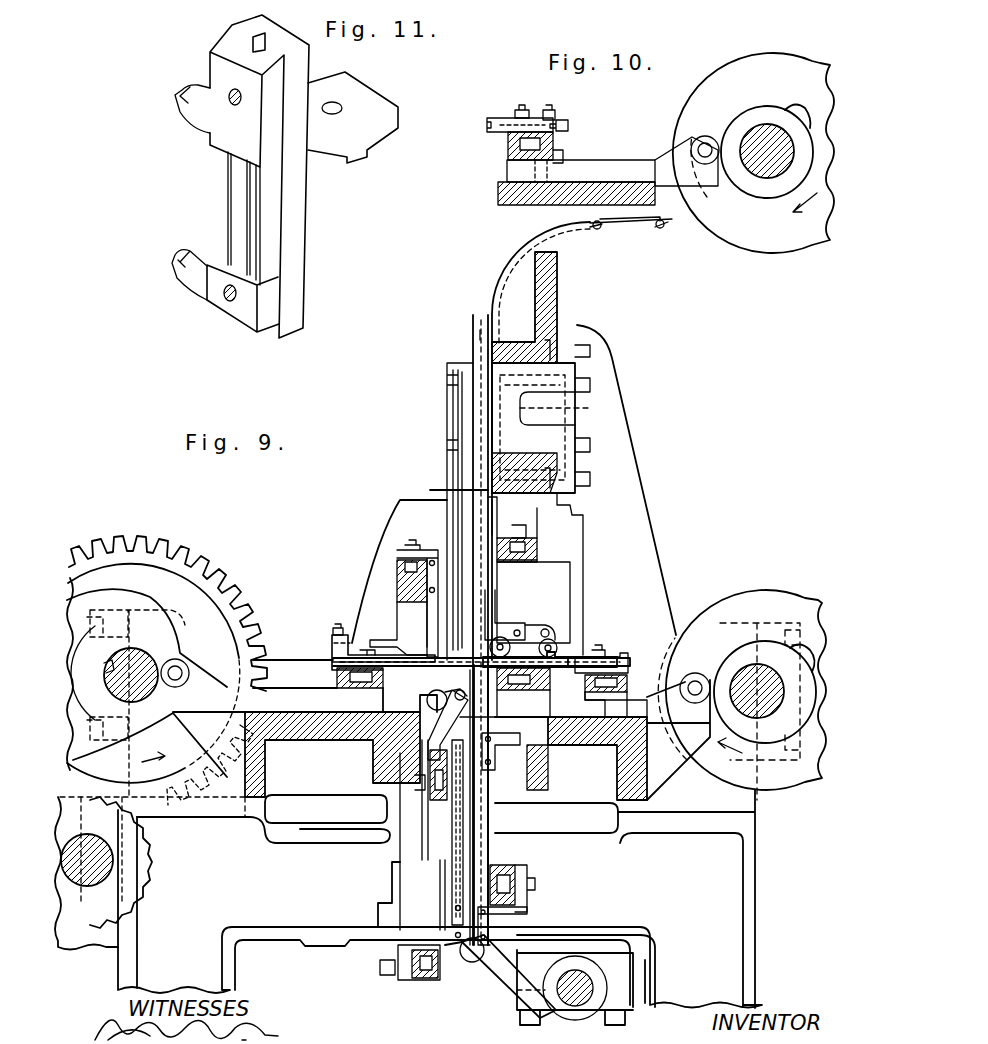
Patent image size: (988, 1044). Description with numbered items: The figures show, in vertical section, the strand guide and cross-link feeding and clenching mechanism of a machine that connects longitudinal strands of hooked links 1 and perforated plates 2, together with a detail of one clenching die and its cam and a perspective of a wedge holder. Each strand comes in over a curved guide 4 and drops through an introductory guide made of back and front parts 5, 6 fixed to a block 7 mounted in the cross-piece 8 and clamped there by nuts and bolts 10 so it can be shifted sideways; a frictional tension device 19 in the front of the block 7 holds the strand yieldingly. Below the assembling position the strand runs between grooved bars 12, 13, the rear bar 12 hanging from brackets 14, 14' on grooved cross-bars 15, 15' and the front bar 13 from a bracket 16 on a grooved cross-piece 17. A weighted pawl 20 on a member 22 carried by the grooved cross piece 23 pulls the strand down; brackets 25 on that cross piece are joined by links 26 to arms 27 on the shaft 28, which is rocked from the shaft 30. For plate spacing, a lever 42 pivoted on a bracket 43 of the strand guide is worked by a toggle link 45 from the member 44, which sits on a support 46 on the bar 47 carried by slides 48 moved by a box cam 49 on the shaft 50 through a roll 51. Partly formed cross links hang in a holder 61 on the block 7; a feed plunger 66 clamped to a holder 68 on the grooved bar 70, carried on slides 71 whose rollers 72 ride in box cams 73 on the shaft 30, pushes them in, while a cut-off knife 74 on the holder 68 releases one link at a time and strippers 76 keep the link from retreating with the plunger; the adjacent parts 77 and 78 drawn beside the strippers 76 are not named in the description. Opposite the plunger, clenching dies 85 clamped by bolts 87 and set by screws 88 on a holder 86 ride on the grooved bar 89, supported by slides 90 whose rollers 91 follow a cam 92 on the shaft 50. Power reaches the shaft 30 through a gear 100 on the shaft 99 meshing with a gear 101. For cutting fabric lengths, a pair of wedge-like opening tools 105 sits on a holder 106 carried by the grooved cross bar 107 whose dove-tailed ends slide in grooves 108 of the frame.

In FIG. 9, the hooked links 1 is at (632, 224).
In FIG. 9, the perforated plates 2 is at (599, 229).
In FIG. 9, the curved guides 4 is at (500, 262).
In FIG. 9, the back part of introductory guide 5 is at (496, 340).
In FIG. 9, the front part of introductory guide 6 is at (472, 335).
In FIG. 9, the block 7 is at (565, 372).
In FIG. 9, the cross-piece 8 is at (550, 300).
In FIG. 9, the nuts and bolts 10 is at (590, 480).
In FIG. 9, the grooved guide bar 12 is at (500, 818).
In FIG. 9, the grooved guide bar 13 is at (468, 855).
In FIG. 9, the bracket 14 is at (552, 772).
In FIG. 9, the bracket 14' is at (529, 923).
In FIG. 9, the grooved cross-bar 15 is at (536, 753).
In FIG. 9, the grooved cross-bar 15' is at (541, 888).
In FIG. 9, the bracket 16 is at (400, 972).
In FIG. 9, the grooved cross-piece 17 is at (428, 982).
In FIG. 9, the frictional tension device 19 is at (566, 408).
In FIG. 9, the pawl 20 is at (448, 694).
In FIG. 9, the member 22 is at (428, 786).
In FIG. 9, the grooved cross piece 23 is at (428, 803).
In FIG. 9, the brackets 25 is at (450, 812).
In FIG. 9, the link 26 is at (450, 870).
In FIG. 9, the arm 27 is at (495, 972).
In FIG. 9, the shaft 28 is at (580, 980).
In FIG. 9, the shaft 30 is at (135, 660).
In FIG. 9, the lever 42 is at (525, 640).
In FIG. 9, the bracket 43 is at (503, 620).
In FIG. 9, the member 44 is at (580, 660).
In FIG. 9, the toggle link 45 is at (555, 638).
In FIG. 9, the support 46 is at (622, 660).
In FIG. 9, the bar 47 is at (620, 694).
In FIG. 9, the slides 48 is at (648, 740).
In FIG. 9, the cam 49 is at (778, 600).
In FIG. 10, the shaft 50 is at (767, 165).
In FIG. 9, the shaft 50 is at (760, 712).
In FIG. 9, the roll 51 is at (692, 673).
In FIG. 9, the guides or holders 61 is at (447, 402).
In FIG. 9, the feed plunger 66 is at (395, 665).
In FIG. 9, the holder 68 is at (333, 655).
In FIG. 9, the grooved bar 70 is at (345, 713).
In FIG. 9, the slides 71 is at (290, 696).
In FIG. 9, the roller 72 is at (185, 663).
In FIG. 9, the box cam 73 is at (112, 605).
In FIG. 9, the cut-off knife 74 is at (380, 640).
In FIG. 9, the strippers 76 is at (425, 626).
In FIG. 9, the plate 77 is at (428, 560).
In FIG. 9, the block 78 is at (397, 578).
In FIG. 10, the clenching dies 85 is at (493, 116).
In FIG. 10, the holder 86 is at (552, 115).
In FIG. 10, the bolts 87 is at (522, 108).
In FIG. 10, the screws 88 is at (570, 124).
In FIG. 10, the grooved bar 89 is at (508, 150).
In FIG. 10, the slides 90 is at (600, 172).
In FIG. 9, the slides 90 is at (523, 692).
In FIG. 10, the roller 91 is at (695, 138).
In FIG. 10, the cam 92 is at (775, 58).
In FIG. 9, the shaft 99 is at (105, 872).
In FIG. 9, the gear 100 is at (130, 860).
In FIG. 9, the gear 101 is at (222, 578).
In FIG. 11, the opening tools 105 is at (182, 88).
In FIG. 11, the holder 106 is at (305, 231).
In FIG. 9, the holder 106 is at (500, 512).
In FIG. 9, the grooved cross bar 107 is at (560, 545).
In FIG. 9, the grooves 108 is at (540, 555).